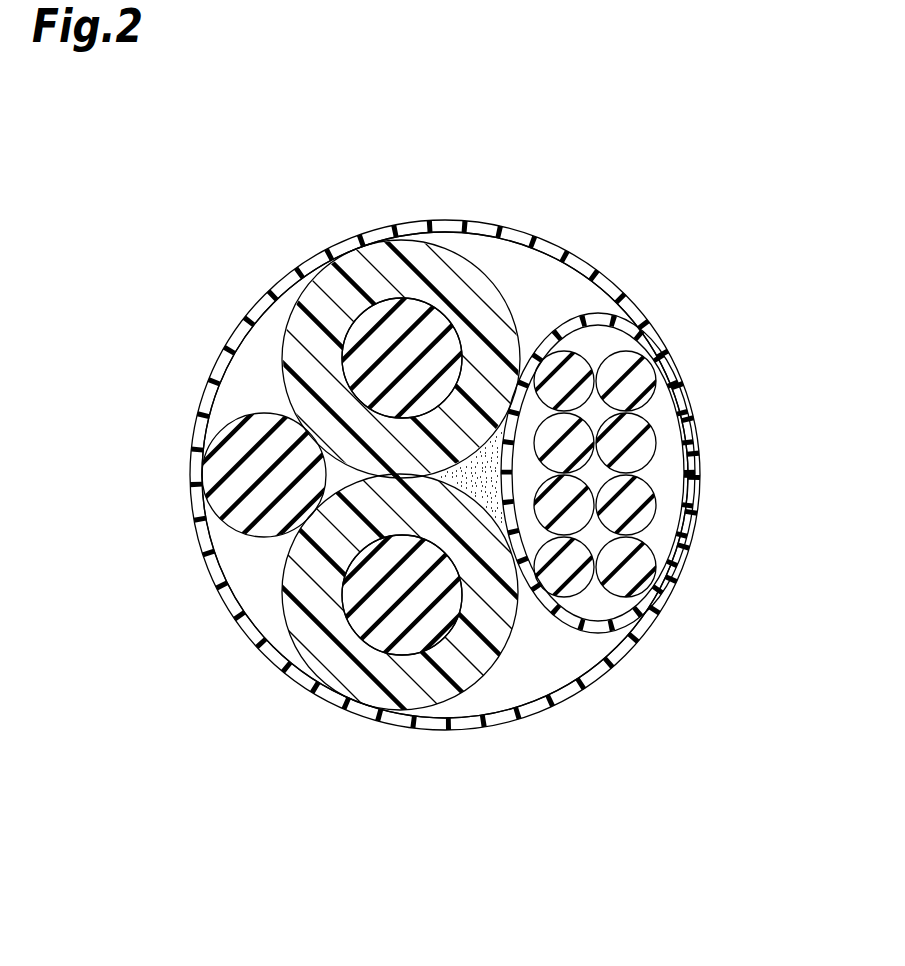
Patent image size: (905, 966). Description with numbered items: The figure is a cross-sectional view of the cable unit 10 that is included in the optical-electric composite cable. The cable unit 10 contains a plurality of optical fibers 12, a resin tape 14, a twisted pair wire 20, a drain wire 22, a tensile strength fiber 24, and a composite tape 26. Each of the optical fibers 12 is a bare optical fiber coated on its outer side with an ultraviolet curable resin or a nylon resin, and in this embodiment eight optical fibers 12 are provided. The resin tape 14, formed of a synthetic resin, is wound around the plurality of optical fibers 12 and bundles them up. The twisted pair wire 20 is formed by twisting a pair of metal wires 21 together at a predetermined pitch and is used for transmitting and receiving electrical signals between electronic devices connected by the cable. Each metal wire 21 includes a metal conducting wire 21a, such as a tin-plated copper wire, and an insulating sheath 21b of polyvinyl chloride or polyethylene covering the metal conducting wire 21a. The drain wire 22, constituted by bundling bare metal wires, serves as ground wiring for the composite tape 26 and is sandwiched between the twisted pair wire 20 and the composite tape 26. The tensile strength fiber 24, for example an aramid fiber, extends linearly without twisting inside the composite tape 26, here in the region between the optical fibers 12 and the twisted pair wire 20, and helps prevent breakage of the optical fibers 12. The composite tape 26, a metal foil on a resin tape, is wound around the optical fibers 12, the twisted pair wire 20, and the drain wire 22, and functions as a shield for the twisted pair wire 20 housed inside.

The cable unit 10 is at (673, 194).
The optical fibers 12 is at (637, 388).
The resin tape 14 is at (601, 320).
The twisted pair wire 20 is at (285, 312).
The metal wires 21 is at (398, 482).
The metal conducting wire 21a is at (407, 330).
The insulating sheath 21b is at (338, 300).
The drain wire 22 is at (213, 472).
The tensile strength fiber 24 is at (480, 500).
The composite tape 26 is at (500, 232).